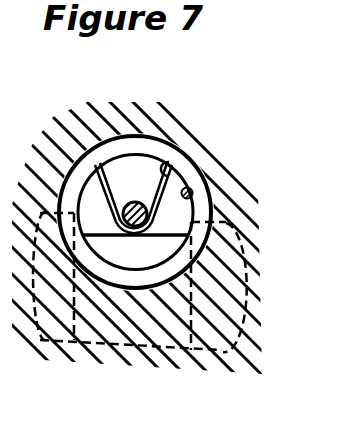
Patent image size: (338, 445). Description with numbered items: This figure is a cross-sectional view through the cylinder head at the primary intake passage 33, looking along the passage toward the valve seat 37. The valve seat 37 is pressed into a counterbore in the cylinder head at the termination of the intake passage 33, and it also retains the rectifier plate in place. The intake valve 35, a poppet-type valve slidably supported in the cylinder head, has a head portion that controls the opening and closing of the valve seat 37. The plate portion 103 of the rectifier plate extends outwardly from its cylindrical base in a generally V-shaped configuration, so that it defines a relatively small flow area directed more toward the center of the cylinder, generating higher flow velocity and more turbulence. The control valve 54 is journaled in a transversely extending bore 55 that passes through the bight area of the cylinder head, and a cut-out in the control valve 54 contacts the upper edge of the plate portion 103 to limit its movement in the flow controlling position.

The valve seat 37 is at (50, 158).
The intake valve 35 is at (139, 202).
The plate portion 103 is at (152, 160).
The intake passage 33 is at (193, 187).
The control valve 54 is at (228, 224).
The bore 55 is at (253, 349).